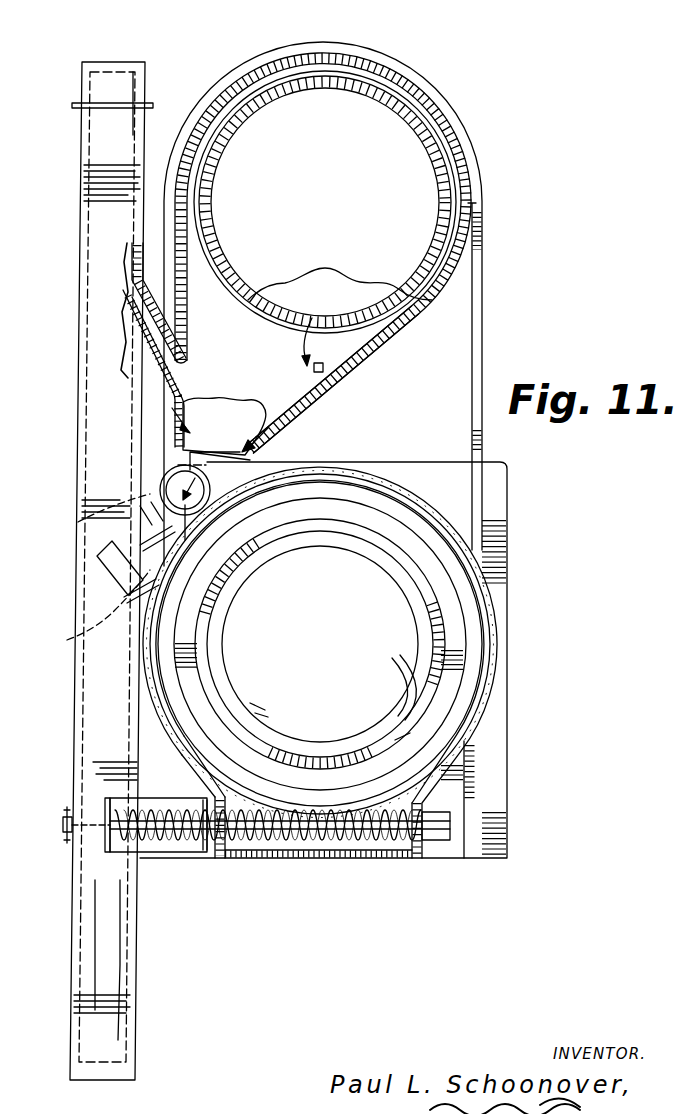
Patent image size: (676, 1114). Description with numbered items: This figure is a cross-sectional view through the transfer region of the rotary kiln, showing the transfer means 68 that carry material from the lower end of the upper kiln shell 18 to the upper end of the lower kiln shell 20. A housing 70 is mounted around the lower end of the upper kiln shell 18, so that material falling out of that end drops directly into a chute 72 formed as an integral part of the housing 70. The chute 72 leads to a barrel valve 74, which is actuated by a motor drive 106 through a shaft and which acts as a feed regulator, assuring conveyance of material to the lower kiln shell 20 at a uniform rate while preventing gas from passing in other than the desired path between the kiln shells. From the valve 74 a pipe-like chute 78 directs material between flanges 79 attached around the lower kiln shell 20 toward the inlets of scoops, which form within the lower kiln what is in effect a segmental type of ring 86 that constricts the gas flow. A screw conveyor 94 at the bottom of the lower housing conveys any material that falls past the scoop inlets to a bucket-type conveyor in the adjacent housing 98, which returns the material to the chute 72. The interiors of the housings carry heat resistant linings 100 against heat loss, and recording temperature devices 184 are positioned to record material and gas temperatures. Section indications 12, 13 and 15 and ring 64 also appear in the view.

The elevator column 12 is at (59, 40).
The section line 13 is at (188, 423).
The section line 15 is at (320, 722).
The upper kiln shell 18 is at (434, 128).
The lower kiln shell 20 is at (362, 546).
The drum ring 64 is at (207, 203).
The transfer means 68 is at (372, 421).
The housing 70 is at (482, 188).
The chute 72 is at (333, 383).
The barrel valve 74 is at (158, 479).
The pipe-like chute 78 is at (78, 641).
The flanges 79 is at (400, 762).
The segmental type of ring 86 is at (236, 690).
The screw conveyor 94 is at (342, 855).
The adjacent housing 98 is at (72, 790).
The heat resistant linings 100 is at (187, 322).
The motor drive 106 is at (150, 502).
The recording temperature devices 184 is at (327, 369).